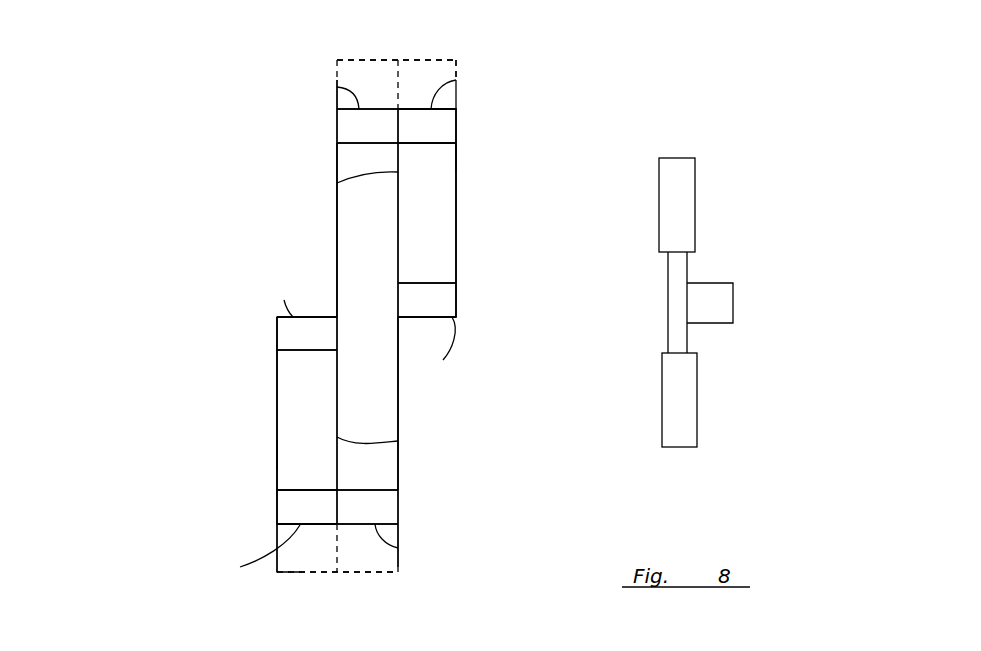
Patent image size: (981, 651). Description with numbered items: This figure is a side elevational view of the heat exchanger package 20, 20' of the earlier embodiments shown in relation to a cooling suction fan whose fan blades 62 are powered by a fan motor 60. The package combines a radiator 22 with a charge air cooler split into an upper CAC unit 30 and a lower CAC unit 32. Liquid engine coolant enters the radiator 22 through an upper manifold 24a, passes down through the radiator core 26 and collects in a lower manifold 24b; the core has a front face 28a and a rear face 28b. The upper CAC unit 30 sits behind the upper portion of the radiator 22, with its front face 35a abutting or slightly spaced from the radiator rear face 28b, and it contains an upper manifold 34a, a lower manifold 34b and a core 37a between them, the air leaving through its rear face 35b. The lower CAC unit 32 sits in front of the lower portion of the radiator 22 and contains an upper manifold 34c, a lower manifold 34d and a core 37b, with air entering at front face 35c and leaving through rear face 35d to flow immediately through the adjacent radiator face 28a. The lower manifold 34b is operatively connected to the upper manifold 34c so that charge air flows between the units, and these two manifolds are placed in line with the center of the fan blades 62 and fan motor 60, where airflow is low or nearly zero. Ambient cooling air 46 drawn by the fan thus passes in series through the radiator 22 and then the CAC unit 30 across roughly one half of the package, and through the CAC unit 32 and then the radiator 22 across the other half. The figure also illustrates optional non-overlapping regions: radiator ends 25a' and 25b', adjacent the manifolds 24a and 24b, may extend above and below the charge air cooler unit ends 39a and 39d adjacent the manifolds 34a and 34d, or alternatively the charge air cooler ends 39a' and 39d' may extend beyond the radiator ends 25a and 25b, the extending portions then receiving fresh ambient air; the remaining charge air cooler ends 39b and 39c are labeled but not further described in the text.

The combined heat exchanger package 20 is at (249, 319).
The heat exchanger package 20' is at (366, 316).
The radiator 22 is at (232, 200).
The upper manifold 24a is at (342, 130).
The lower manifold 24b is at (388, 503).
The upper end of radiator 25a is at (303, 87).
The lower end of radiator 25b is at (421, 547).
The radiator end 25a' is at (369, 64).
The radiator end 25b' is at (356, 575).
The radiator core 26 is at (385, 331).
The front face of radiator core 28a is at (337, 257).
The rear face of radiator core 28b is at (398, 403).
The upper charge air cooler unit 30 is at (536, 164).
The lower charge air cooler unit 32 is at (174, 484).
The upper manifold of upper CAC unit 34a is at (440, 118).
The lower manifold of upper CAC unit 34b is at (443, 303).
The upper manifold of lower CAC unit 34c is at (288, 336).
The lower manifold of lower CAC unit 34d is at (278, 517).
The front face of upper CAC unit 35a is at (337, 183).
The rear face of upper CAC unit 35b is at (448, 156).
The front face of lower CAC unit core 35c is at (276, 457).
The rear face of lower CAC unit 35d is at (398, 441).
The core of upper CAC unit 37a is at (440, 225).
The core of lower CAC unit 37b is at (290, 390).
The upper end of charge air cooler unit 39a is at (478, 86).
The second corner fillet 39b is at (443, 360).
The third corner fillet 39c is at (293, 317).
The lower end of charge air cooler unit 39d is at (237, 550).
The charge air cooler unit end 39a' is at (477, 49).
The charge air cooler unit end 39d' is at (262, 598).
The ambient cooling air 46 is at (175, 213).
The fan motor 60 is at (722, 298).
The fan blades 62 is at (693, 165).